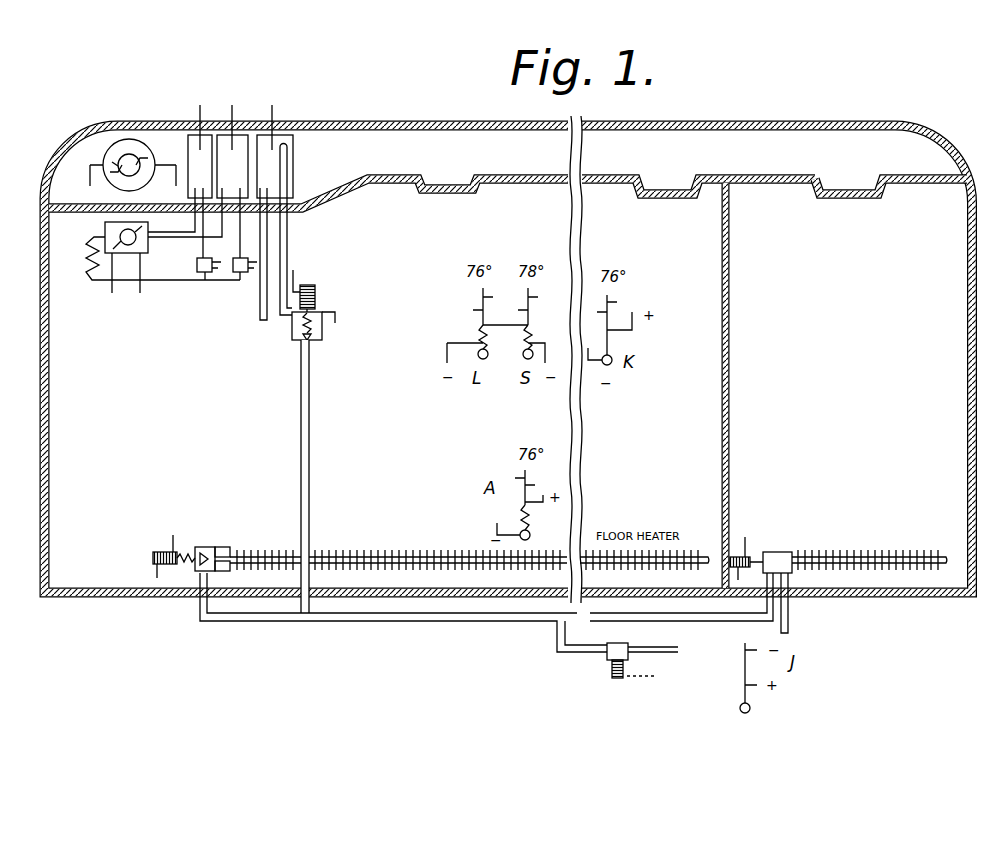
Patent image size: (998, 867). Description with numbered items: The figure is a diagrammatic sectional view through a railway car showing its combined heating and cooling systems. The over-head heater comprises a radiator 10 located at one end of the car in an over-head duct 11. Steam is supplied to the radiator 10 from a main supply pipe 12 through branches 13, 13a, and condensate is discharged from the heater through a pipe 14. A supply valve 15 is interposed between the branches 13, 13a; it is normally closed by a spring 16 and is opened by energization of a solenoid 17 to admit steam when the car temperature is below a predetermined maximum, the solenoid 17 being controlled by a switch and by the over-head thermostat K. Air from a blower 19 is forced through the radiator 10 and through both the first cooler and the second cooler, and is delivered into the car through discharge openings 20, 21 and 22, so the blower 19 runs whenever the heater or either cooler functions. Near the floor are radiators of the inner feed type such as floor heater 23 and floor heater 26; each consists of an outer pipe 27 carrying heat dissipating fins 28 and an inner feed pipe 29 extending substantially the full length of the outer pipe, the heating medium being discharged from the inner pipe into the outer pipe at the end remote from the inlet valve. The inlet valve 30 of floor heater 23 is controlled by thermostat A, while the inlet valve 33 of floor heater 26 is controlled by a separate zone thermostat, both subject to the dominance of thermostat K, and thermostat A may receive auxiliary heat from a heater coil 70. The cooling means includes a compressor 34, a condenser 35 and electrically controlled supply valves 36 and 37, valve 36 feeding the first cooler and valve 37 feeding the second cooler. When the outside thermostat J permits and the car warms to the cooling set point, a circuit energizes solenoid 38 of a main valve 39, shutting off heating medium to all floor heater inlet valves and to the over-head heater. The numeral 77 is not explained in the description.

The radiator 10 is at (294, 160).
The over-head duct 11 is at (452, 135).
The main supply pipe 12 is at (679, 650).
The branch 13 is at (310, 428).
The branch 13a is at (288, 240).
The pipe 14 is at (259, 313).
The supply valve 15 is at (300, 342).
The spring 16 is at (298, 330).
The solenoid 17 is at (316, 298).
The blower 19 is at (160, 150).
The discharge opening 20 is at (449, 191).
The discharge opening 21 is at (678, 196).
The discharge opening 22 is at (856, 196).
The floor heater 23 is at (427, 556).
The floor heater 26 is at (850, 556).
The outer pipe 27 is at (255, 556).
The heat dissipating fins 28 is at (330, 556).
The inner feed pipe 29 is at (218, 548).
The inlet valve 30 is at (160, 551).
The inlet valve 33 is at (738, 556).
The compressor 34 is at (105, 228).
The condenser 35 is at (90, 263).
The supply valve 36 is at (200, 272).
The supply valve 37 is at (233, 274).
The solenoid 38 is at (612, 674).
The main valve 39 is at (622, 647).
The heater coil 70 is at (532, 515).
The fan motor lead 77 is at (115, 163).